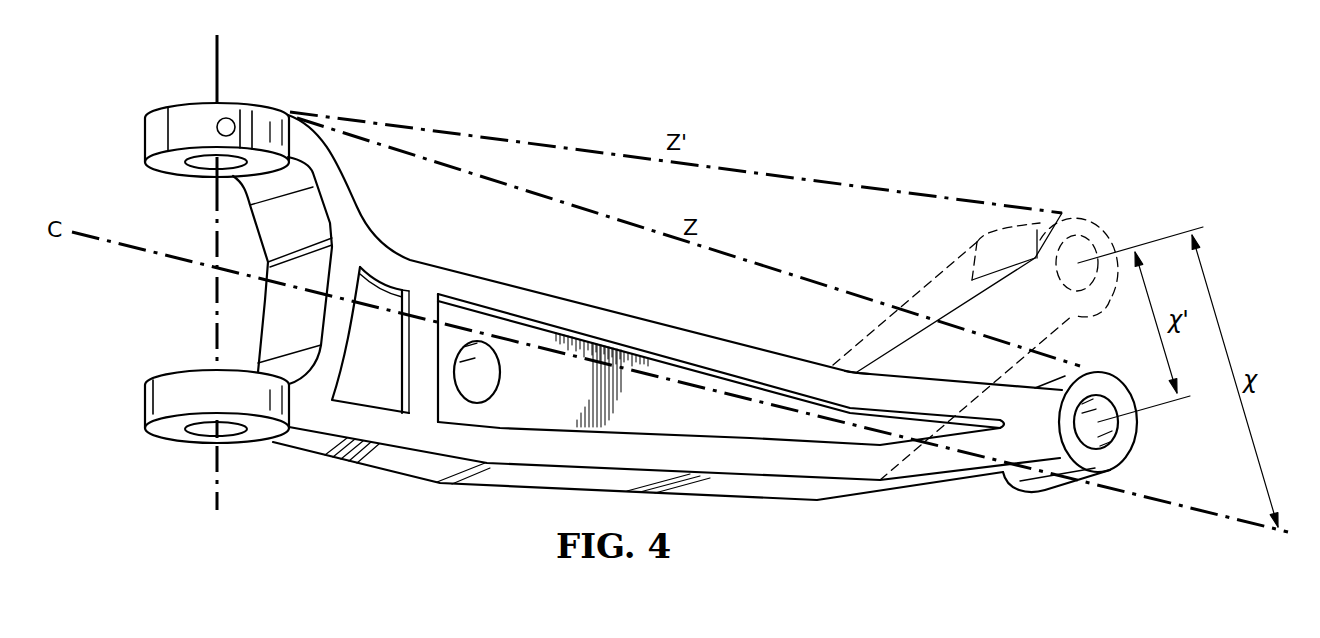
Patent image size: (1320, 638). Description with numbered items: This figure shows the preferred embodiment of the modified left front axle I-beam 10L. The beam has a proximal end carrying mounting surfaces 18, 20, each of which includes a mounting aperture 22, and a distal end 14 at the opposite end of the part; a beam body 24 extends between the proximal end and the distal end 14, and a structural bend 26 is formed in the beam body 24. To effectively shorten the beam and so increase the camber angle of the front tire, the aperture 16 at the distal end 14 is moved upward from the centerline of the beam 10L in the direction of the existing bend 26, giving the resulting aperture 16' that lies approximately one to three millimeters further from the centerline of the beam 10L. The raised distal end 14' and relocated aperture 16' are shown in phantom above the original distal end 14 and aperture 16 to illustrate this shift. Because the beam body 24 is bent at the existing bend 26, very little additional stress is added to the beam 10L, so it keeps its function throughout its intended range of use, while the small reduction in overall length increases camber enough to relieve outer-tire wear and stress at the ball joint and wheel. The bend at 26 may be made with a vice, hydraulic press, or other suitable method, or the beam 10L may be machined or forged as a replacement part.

The I-beam 10L is at (885, 152).
The distal end 14 is at (690, 328).
The arm body in raised position 14' is at (953, 346).
The aperture 16 is at (1125, 422).
The resulting aperture 16' is at (1077, 230).
The mounting surface 18 is at (145, 138).
The mounting surface 20 is at (145, 403).
The mounting aperture 22 is at (207, 163).
The beam body 24 is at (660, 322).
The structural bend 26 is at (858, 372).